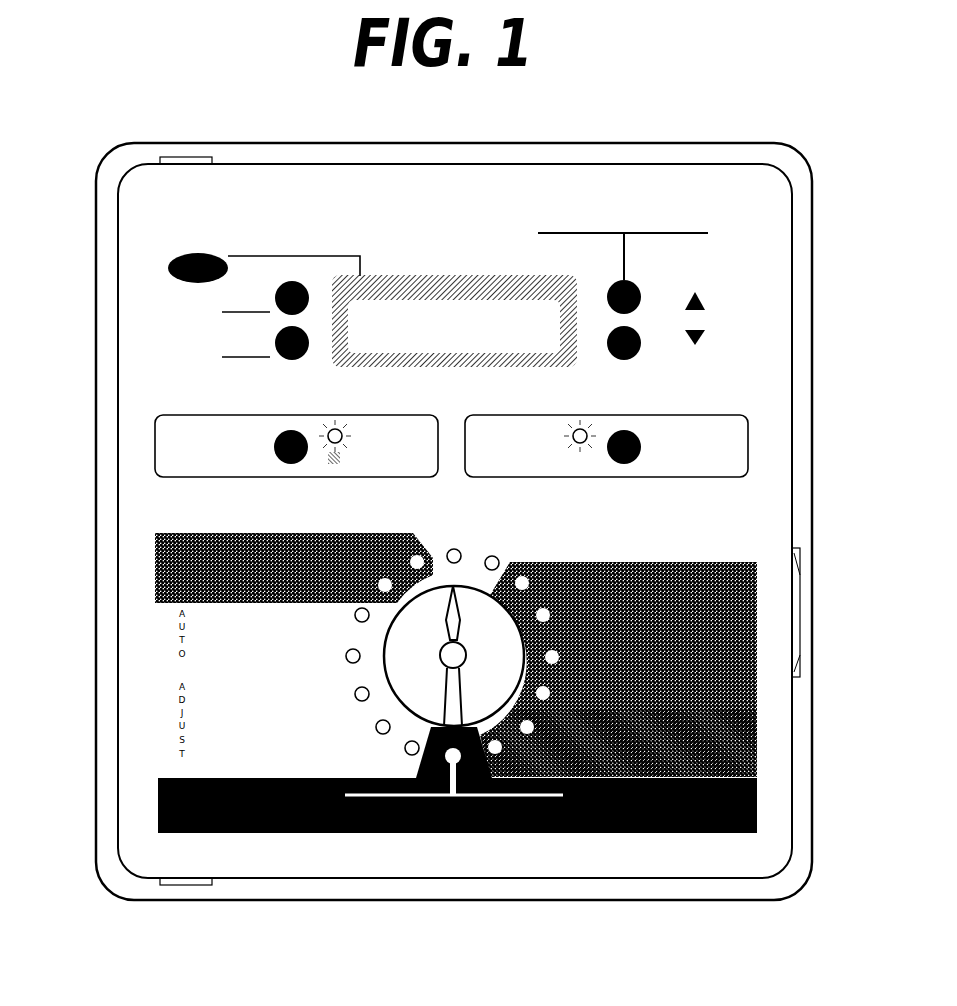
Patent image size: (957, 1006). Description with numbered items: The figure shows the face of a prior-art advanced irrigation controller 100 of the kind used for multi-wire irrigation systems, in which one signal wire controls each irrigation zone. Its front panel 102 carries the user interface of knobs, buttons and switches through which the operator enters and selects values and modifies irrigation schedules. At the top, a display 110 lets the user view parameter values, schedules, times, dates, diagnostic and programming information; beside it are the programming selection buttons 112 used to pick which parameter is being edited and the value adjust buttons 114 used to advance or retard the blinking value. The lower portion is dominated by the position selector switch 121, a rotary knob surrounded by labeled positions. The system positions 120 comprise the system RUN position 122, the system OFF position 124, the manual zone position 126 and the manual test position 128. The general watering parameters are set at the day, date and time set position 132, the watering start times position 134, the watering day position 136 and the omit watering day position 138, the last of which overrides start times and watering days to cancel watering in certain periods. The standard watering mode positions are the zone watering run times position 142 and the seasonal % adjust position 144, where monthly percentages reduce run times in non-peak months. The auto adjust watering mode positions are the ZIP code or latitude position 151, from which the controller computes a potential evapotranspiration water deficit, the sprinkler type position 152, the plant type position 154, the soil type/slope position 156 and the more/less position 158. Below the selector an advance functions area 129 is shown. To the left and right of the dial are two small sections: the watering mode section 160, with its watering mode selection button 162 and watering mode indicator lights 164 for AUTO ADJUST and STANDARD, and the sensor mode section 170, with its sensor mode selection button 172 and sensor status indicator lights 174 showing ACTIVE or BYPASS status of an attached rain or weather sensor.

The irrigation controller 100 is at (746, 102).
The front panel 102 is at (750, 370).
The display 110 is at (450, 300).
The programming selection buttons 112 is at (196, 250).
The value adjust buttons 114 is at (650, 290).
The system positions 120 is at (752, 498).
The position selector switch 121 is at (466, 657).
The system RUN position 122 is at (452, 522).
The system OFF position 124 is at (534, 541).
The manual zone position 126 is at (340, 536).
The manual test position 128 is at (257, 568).
The advance functions area 129 is at (450, 834).
The day, date and time set position 132 is at (647, 570).
The watering start times position 134 is at (765, 655).
The watering day position 136 is at (735, 694).
The omit watering day position 138 is at (720, 729).
The zone watering run times position 142 is at (738, 615).
The seasonal % adjust position 144 is at (718, 764).
The ZIP code or latitude position 151 is at (236, 766).
The sprinkler type position 152 is at (235, 729).
The plant type position 154 is at (252, 694).
The soil type/slope position 156 is at (254, 656).
The more/less position 158 is at (252, 615).
The watering mode section 160 is at (155, 447).
The watering mode selection button 162 is at (292, 430).
The watering mode indicator lights 164 is at (336, 428).
The sensor mode section 170 is at (748, 447).
The sensor mode selection button 172 is at (626, 430).
The sensor status indicator lights 174 is at (582, 428).